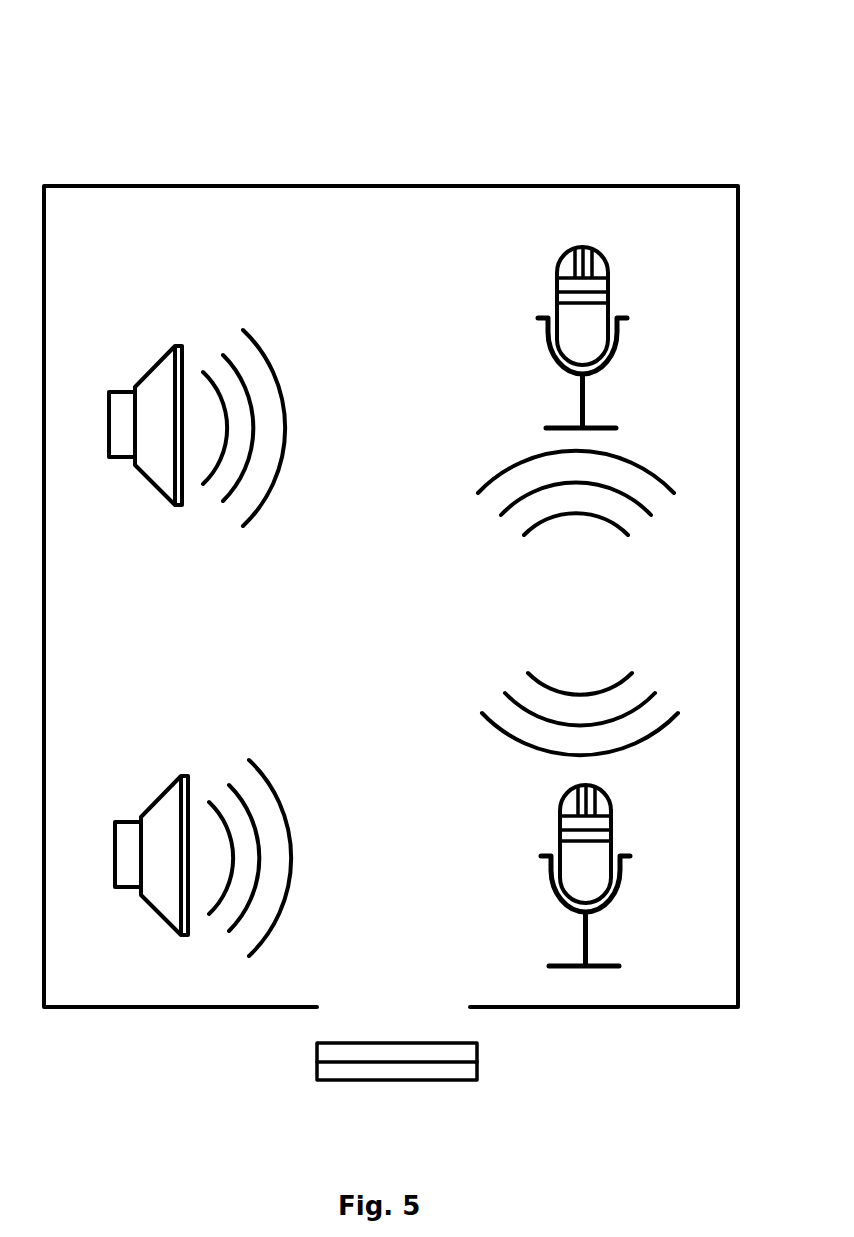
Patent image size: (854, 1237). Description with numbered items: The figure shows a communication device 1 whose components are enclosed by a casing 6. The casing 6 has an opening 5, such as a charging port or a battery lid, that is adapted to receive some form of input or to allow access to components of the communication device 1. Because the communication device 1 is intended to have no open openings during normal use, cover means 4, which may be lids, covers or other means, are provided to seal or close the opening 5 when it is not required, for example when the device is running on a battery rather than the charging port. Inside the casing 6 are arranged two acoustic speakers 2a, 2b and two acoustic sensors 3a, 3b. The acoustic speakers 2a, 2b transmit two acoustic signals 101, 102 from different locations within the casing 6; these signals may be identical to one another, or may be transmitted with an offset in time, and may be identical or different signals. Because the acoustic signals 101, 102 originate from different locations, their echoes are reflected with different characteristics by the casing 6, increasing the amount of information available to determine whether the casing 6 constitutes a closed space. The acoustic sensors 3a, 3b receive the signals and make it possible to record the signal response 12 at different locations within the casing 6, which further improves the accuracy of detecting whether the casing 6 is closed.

The communication device 1 is at (90, 102).
The acoustic speaker 2a is at (155, 367).
The acoustic speaker 2b is at (143, 821).
The acoustic sensor 3a is at (538, 322).
The acoustic sensor 3b is at (556, 867).
The cover means 4 is at (478, 1072).
The opening 5 is at (413, 1000).
The casing 6 is at (180, 1010).
The signal response 12 is at (575, 527).
The acoustic signal 101 is at (243, 328).
The acoustic signal 102 is at (237, 810).